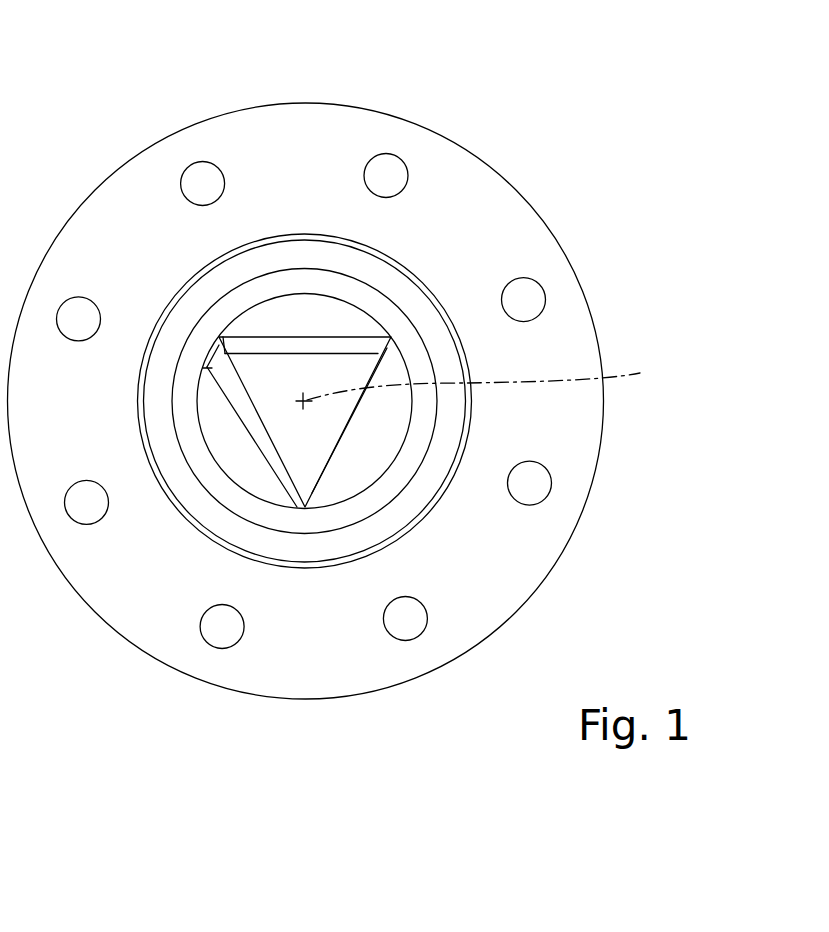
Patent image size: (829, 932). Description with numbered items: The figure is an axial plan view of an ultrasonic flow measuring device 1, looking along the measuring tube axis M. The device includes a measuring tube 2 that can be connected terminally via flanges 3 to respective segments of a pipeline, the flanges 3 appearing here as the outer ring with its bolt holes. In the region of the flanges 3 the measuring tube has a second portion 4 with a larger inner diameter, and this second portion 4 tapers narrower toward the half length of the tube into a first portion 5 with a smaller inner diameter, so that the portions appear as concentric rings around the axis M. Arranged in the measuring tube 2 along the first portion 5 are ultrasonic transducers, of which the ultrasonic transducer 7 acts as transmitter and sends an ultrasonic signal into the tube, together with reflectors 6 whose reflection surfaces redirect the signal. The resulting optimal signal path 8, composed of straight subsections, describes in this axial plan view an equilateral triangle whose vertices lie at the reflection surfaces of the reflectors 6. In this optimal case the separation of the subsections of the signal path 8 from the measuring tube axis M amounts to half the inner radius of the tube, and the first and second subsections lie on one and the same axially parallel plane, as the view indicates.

The ultrasonic flow measuring device 1 is at (532, 102).
The measuring tube 2 is at (520, 553).
The flanges 3 is at (407, 620).
The second portion 4 is at (287, 537).
The first portion 5 is at (208, 460).
The reflectors 6 is at (223, 338).
The ultrasonic transducer 7 is at (313, 503).
The signal path 8 is at (358, 380).
The measuring tube axis M is at (483, 382).